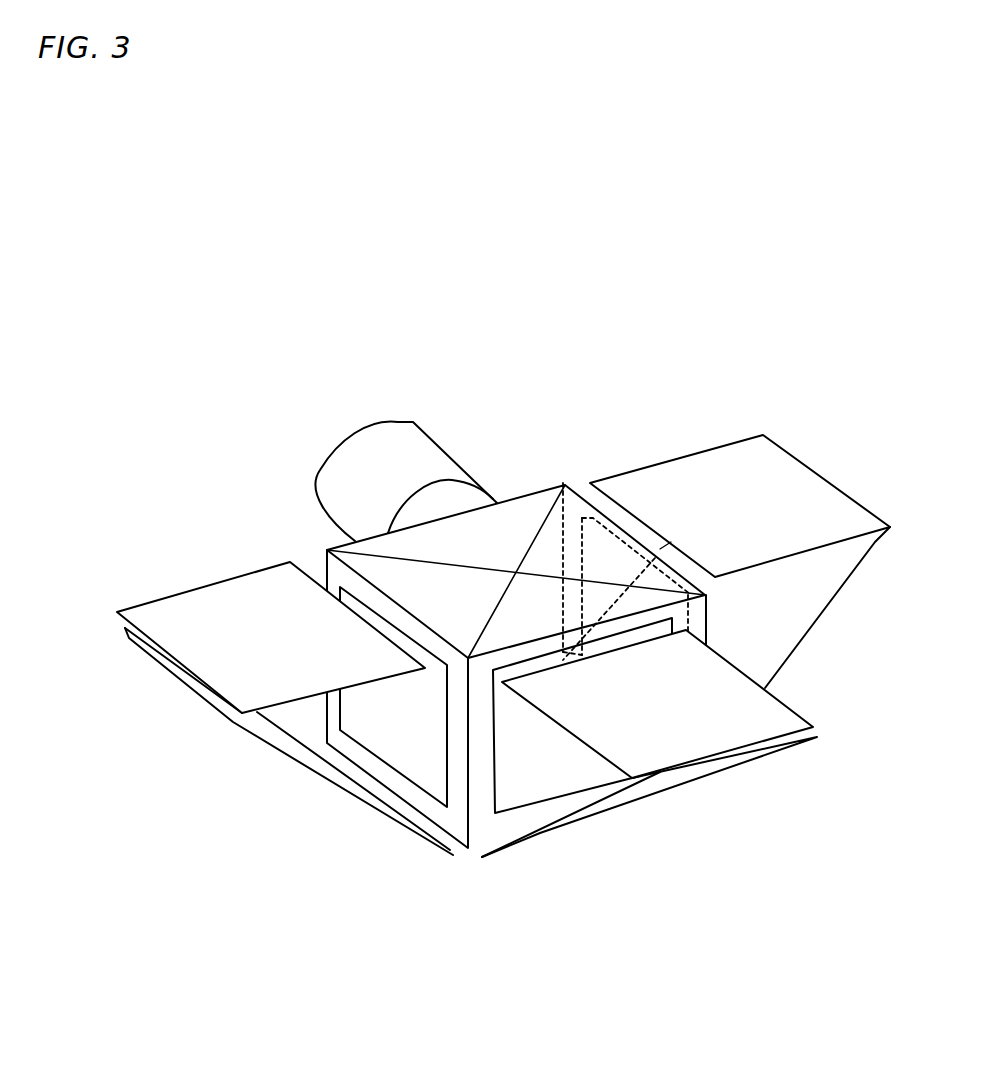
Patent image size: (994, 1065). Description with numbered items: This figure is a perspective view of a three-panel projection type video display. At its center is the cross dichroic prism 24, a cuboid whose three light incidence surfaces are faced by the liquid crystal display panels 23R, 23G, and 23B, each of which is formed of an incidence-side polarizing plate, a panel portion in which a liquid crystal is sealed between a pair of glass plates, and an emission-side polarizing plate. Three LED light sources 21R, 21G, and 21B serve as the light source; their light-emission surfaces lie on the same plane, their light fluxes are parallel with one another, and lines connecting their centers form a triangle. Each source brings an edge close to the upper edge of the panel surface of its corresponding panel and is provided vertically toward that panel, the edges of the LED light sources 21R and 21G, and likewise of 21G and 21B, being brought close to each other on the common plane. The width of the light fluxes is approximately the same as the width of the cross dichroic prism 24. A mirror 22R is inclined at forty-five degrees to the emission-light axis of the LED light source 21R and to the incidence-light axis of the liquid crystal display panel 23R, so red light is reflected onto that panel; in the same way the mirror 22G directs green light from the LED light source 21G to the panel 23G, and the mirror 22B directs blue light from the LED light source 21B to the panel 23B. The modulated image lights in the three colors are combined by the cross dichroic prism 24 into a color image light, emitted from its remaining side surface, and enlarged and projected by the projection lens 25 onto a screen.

The LED light source 21R is at (645, 472).
The LED light source 21G is at (772, 713).
The LED light source 21B is at (212, 598).
The mirror 22R is at (833, 585).
The mirror 22G is at (712, 777).
The mirror 22B is at (308, 760).
The liquid crystal display panel 23R is at (590, 514).
The liquid crystal display panel 23G is at (505, 788).
The liquid crystal display panel 23B is at (438, 778).
The cross dichroic prism 24 is at (533, 500).
The projection lens 25 is at (366, 450).